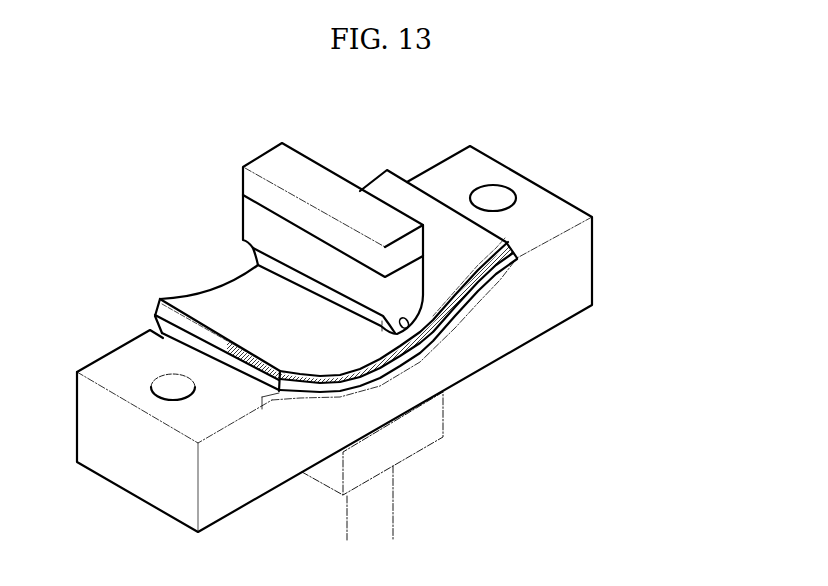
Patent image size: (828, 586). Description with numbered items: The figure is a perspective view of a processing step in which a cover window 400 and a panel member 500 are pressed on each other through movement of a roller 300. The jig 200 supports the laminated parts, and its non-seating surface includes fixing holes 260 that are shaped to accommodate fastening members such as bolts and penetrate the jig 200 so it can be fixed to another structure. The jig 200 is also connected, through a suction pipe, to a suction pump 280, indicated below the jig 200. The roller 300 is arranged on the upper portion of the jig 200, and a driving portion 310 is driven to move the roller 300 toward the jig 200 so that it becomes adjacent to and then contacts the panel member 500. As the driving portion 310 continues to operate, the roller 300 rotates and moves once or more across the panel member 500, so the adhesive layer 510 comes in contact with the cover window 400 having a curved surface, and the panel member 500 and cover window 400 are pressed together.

The jig 200 is at (597, 226).
The fixing holes 260 is at (497, 196).
The suction pump 280 is at (444, 417).
The roller 300 is at (250, 220).
The driving portion 310 is at (250, 181).
The cover window 400 is at (163, 334).
The panel member 500 is at (220, 300).
The adhesive layer 510 is at (158, 318).